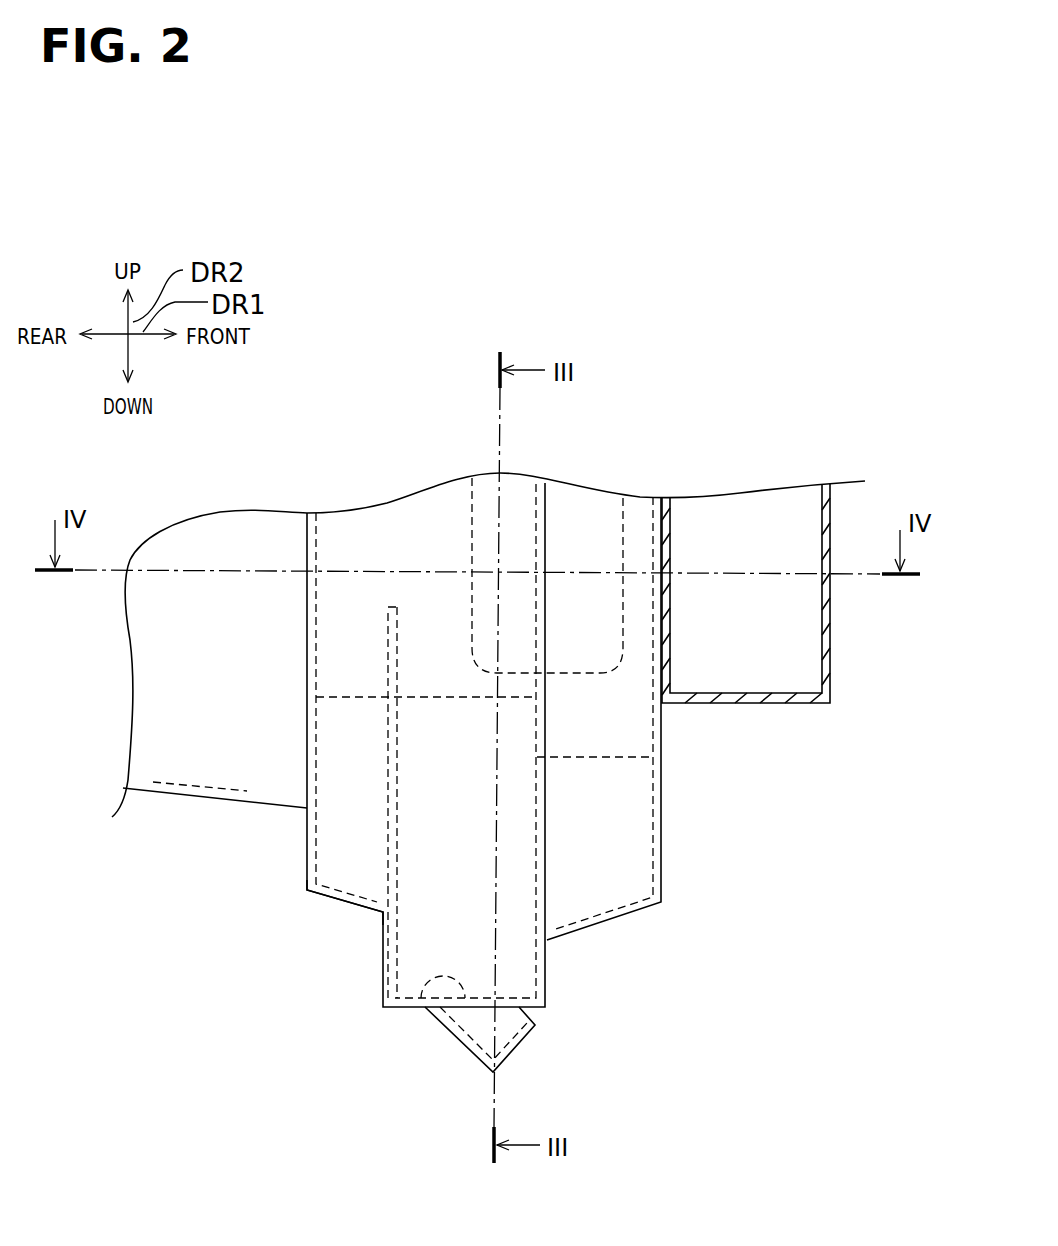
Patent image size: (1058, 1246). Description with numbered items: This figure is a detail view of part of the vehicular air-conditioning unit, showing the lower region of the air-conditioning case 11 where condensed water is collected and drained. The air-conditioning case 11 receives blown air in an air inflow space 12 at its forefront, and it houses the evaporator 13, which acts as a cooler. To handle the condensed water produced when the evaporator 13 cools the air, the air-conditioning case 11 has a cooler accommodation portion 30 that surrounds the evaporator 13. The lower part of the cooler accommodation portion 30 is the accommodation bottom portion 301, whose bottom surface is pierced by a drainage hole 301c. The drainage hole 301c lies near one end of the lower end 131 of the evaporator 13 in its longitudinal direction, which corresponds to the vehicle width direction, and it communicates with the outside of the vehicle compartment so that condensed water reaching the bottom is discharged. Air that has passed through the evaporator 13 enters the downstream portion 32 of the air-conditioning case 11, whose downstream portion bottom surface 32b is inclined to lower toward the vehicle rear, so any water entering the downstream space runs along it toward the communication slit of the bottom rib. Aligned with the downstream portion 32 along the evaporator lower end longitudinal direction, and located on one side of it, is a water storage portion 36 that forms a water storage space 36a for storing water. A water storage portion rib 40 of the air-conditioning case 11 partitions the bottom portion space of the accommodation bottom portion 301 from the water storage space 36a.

The air-conditioning case 11 is at (152, 855).
The cooler accommodation portion 30 is at (387, 500).
The evaporator 13 is at (597, 510).
The air inflow space 12 is at (799, 627).
The lower end 131 is at (571, 674).
The accommodation bottom portion 301 is at (661, 883).
The drainage hole 301c is at (421, 1000).
The water storage portion rib 40 is at (380, 853).
The water storage portion 36 is at (303, 867).
The water storage space 36a is at (332, 863).
The downstream portion 32 is at (213, 798).
The downstream portion bottom surface 32b is at (153, 782).